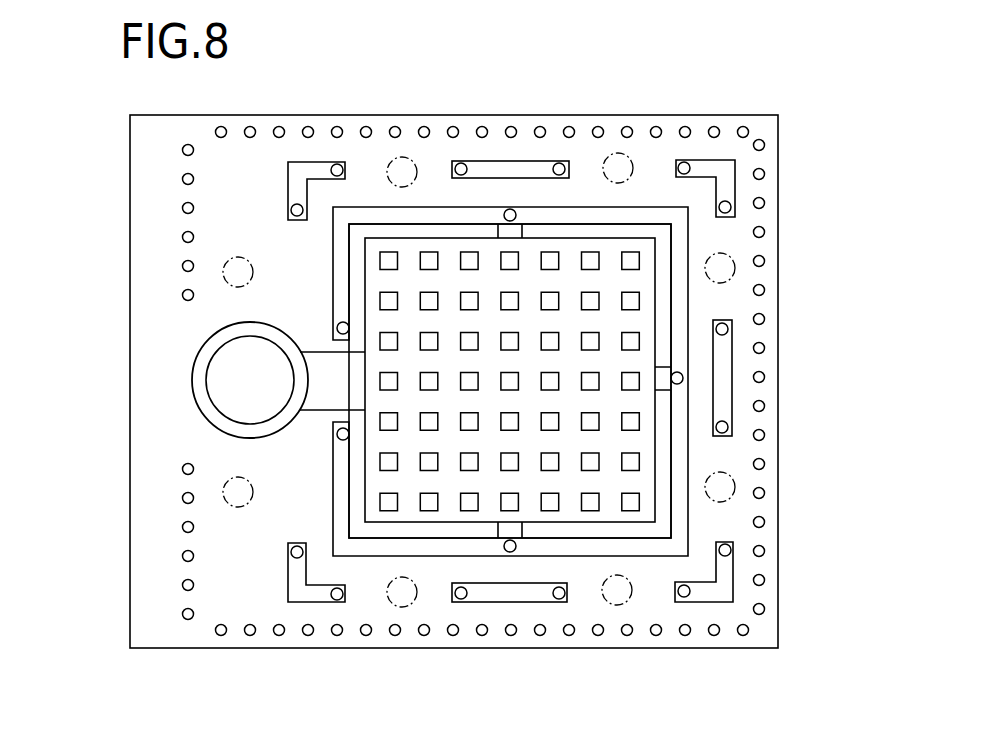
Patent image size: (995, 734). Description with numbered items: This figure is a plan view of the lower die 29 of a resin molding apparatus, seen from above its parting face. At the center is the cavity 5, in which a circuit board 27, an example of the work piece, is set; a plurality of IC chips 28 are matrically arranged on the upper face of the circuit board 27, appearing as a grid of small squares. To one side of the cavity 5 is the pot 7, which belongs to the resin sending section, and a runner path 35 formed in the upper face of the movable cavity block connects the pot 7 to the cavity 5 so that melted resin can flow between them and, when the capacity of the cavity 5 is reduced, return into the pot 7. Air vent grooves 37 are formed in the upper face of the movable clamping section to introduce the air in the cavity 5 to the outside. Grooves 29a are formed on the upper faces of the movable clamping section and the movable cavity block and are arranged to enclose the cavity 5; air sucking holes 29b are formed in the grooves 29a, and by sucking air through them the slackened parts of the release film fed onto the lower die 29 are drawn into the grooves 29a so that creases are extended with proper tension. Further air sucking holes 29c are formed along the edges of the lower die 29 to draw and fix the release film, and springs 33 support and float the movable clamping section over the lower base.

The cavity 5 is at (397, 238).
The pot 7 is at (203, 363).
The circuit board 27 is at (537, 245).
The IC chips 28 is at (435, 248).
The lower die 29 is at (783, 93).
The grooves 29a is at (637, 207).
The air sucking holes 29b is at (733, 200).
The air sucking holes 29c is at (683, 636).
The springs 33 is at (733, 263).
The runner path 35 is at (322, 403).
The air vent grooves 37 is at (498, 228).